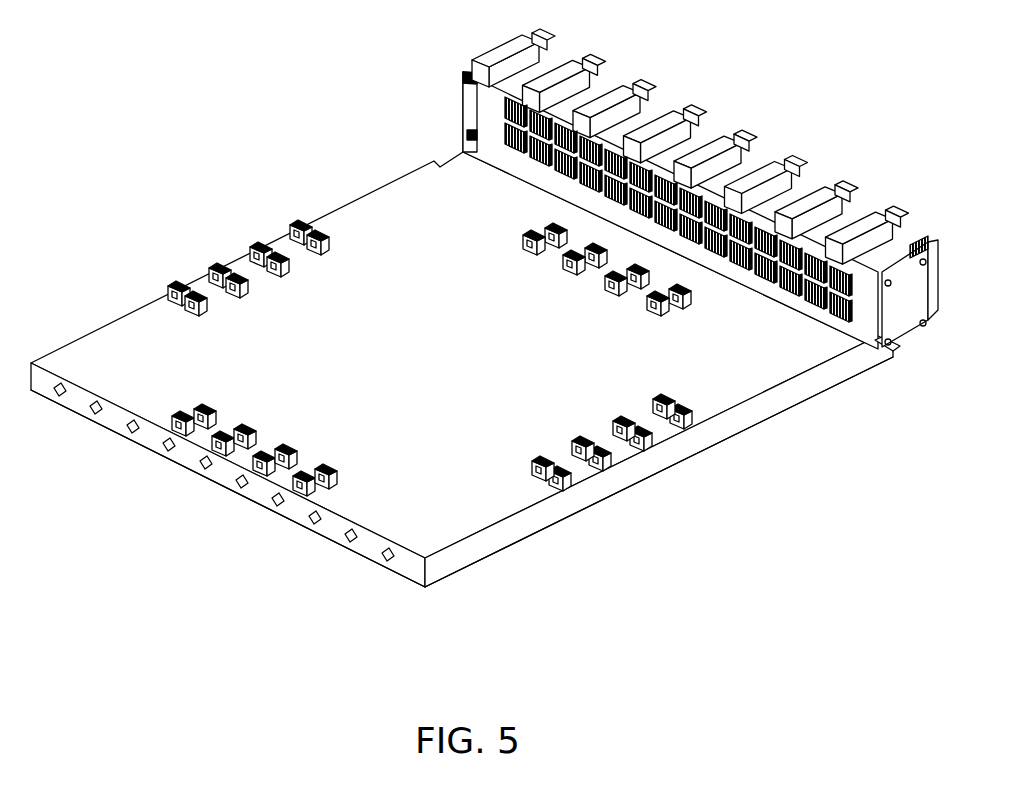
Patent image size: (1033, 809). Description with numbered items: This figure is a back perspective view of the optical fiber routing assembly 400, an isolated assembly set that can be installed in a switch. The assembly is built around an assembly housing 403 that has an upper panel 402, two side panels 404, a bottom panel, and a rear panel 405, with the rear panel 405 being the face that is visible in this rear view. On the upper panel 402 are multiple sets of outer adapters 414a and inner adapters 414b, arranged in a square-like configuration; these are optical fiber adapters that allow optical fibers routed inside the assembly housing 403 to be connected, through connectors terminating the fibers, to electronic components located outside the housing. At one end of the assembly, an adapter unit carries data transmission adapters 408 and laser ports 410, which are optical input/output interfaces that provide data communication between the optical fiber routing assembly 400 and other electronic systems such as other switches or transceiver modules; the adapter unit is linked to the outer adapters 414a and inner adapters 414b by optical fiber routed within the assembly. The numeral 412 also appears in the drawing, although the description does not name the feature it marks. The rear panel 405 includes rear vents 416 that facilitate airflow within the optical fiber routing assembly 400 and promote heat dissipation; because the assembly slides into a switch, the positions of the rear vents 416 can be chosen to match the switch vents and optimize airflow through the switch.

The optical fiber routing assembly 400 is at (224, 63).
The upper panel 402 is at (133, 333).
The assembly housing 403 is at (524, 557).
The side panels 404 is at (593, 487).
The rear panel 405 is at (413, 565).
The data transmission adapters 408 is at (940, 290).
The laser ports 410 is at (895, 208).
The connector module 412 is at (870, 220).
The outer adapters 414a is at (302, 217).
The inner adapters 414b is at (330, 245).
The rear vents 416 is at (200, 462).